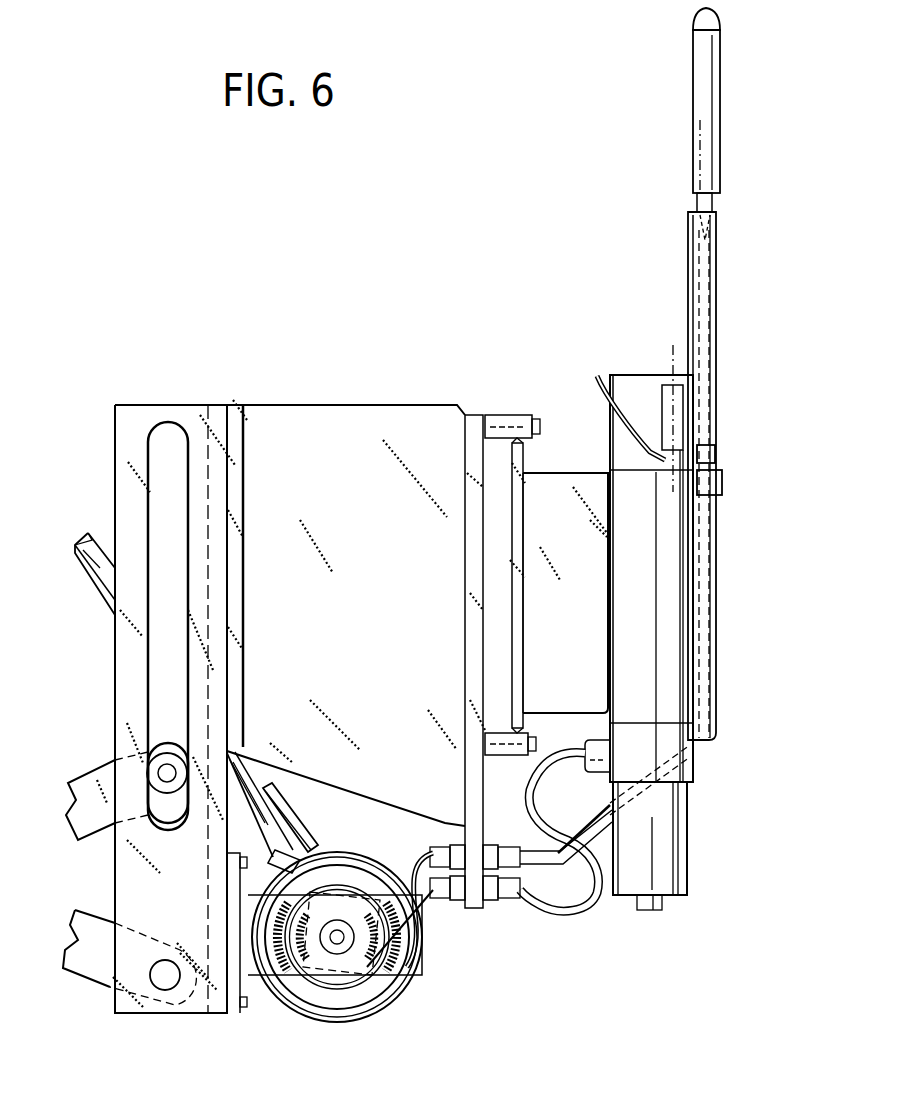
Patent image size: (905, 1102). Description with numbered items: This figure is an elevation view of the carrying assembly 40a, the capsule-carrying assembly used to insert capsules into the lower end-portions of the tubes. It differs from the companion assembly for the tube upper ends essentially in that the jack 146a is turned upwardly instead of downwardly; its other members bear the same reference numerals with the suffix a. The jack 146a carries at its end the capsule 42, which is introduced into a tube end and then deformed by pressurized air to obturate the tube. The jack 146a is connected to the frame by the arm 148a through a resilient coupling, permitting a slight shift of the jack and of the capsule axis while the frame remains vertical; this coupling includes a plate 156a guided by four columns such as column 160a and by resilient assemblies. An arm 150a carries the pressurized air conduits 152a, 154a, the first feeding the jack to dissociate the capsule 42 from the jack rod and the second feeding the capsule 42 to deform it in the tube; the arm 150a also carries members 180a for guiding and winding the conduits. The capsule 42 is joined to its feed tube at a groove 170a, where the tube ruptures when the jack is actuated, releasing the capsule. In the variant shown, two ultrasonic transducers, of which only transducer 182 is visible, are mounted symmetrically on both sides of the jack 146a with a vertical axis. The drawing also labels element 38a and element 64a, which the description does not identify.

The support plate 38a is at (93, 987).
The mounting bracket 64a is at (93, 927).
The carrying assembly 40a is at (495, 298).
The capsule 42 is at (702, 55).
The groove 170a is at (690, 235).
The ultrasonic transducer 182 is at (655, 387).
The arm 148a is at (552, 495).
The plate 156a is at (508, 412).
The column 160a is at (520, 460).
The jack 146a is at (665, 643).
The pressurized air conduit 154a is at (700, 733).
The pressurized air conduit 152a is at (595, 905).
The arm 150a is at (250, 957).
The guiding and winding members 180a is at (367, 967).